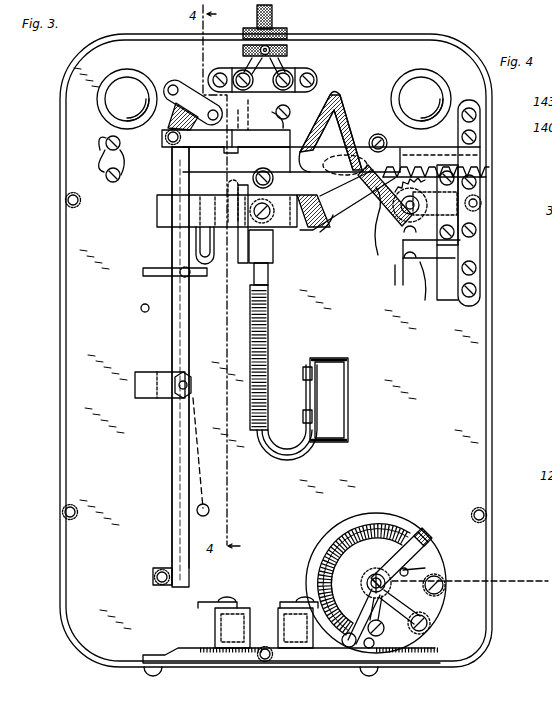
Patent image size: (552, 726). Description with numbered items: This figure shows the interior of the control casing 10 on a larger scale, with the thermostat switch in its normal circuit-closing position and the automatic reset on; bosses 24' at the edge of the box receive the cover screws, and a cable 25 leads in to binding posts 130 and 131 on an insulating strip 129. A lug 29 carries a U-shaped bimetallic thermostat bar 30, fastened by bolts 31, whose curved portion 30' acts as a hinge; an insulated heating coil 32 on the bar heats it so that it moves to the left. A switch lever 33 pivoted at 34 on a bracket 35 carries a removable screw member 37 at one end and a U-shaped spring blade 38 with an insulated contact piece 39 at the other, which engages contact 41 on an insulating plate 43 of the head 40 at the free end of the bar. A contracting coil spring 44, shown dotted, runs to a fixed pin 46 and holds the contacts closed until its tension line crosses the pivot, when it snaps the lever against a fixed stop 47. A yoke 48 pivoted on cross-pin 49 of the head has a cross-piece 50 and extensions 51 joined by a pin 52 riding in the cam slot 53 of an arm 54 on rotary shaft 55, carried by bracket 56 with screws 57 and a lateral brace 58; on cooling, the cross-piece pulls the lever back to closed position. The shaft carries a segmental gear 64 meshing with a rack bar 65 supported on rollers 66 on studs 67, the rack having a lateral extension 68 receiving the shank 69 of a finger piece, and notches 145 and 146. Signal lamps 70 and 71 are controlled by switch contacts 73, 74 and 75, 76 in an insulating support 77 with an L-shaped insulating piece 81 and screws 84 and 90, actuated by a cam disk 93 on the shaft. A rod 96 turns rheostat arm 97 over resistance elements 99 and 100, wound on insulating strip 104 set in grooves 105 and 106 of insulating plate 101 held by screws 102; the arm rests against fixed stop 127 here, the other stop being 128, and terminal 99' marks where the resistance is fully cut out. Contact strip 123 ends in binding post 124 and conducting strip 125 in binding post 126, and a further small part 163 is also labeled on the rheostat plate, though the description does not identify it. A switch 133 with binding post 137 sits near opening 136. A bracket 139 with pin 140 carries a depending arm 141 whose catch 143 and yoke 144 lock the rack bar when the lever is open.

The casing 10 is at (490, 385).
The bosses 24' is at (51, 196).
The cable 25 is at (273, 17).
The lug 29 is at (333, 418).
The thermostat bar 30 is at (287, 423).
The curved portion 30' is at (295, 453).
The bolts 31 is at (305, 412).
The heating coil 32 is at (269, 330).
The switch lever 33 is at (172, 488).
The pivot 34 is at (180, 382).
The bracket 35 is at (160, 398).
The screw member 37 is at (158, 583).
The spring blade 38 is at (204, 268).
The contact piece 39 is at (208, 268).
The head 40 is at (274, 262).
The contact 41 is at (232, 196).
The insulating plate 43 is at (240, 266).
The coil spring 44 is at (200, 432).
The fixed pin 46 is at (206, 504).
The fixed stop 47 is at (141, 308).
The yoke 48 is at (328, 229).
The cross-pin 49 is at (271, 211).
The cross-piece 50 is at (160, 221).
The extensions 51 is at (346, 200).
The pin 52 is at (370, 205).
The cam slot 53 is at (336, 100).
The arm 54 is at (372, 222).
The rotary shaft 55 is at (394, 265).
The bracket 56 is at (455, 236).
The screws 57 is at (478, 200).
The lateral brace 58 is at (480, 210).
The segmental gear 64 is at (380, 129).
The rack bar 65 is at (331, 159).
The rollers 66 is at (108, 138).
The studs 67 is at (268, 168).
The lateral extension 68 is at (271, 114).
The shank 69 is at (290, 108).
The signal lamp 70 is at (128, 78).
The signal lamp 71 is at (410, 85).
The switch contact 73 is at (446, 272).
The switch contact 74 is at (448, 284).
The switch contact 75 is at (400, 150).
The switch contact 76 is at (460, 128).
The insulating support 77 is at (452, 248).
The L-shaped insulating piece 81 is at (478, 262).
The screw 84 is at (478, 138).
The screw 90 is at (478, 116).
The cam disk 93 is at (371, 231).
The rod 96 is at (370, 580).
The rheostat arm 97 is at (427, 542).
The resistance element 99 is at (364, 566).
The terminal 99' is at (340, 661).
The resistance element 100 is at (366, 520).
The insulating plate 101 is at (446, 600).
The screws 102 is at (398, 640).
The insulating strip 104 is at (408, 572).
The groove 105 is at (358, 525).
The groove 106 is at (392, 538).
The contact strip 123 is at (436, 618).
The binding post 124 is at (429, 630).
The conducting strip 125 is at (472, 577).
The binding post 126 is at (446, 586).
The fixed stop 127 is at (430, 568).
The fixed stop 128 is at (385, 634).
The insulating strip 129 is at (307, 70).
The binding post 130 is at (243, 68).
The binding post 131 is at (283, 70).
The switch 133 is at (262, 596).
The opening 136 is at (192, 648).
The binding post 137 is at (232, 602).
The bracket 139 is at (185, 82).
The pin 140 is at (166, 137).
The arm 141 is at (142, 252).
The catch 143 is at (242, 118).
The yoke 144 is at (150, 278).
The notch 145 is at (282, 146).
The notch 146 is at (234, 153).
The pin 163 is at (369, 649).